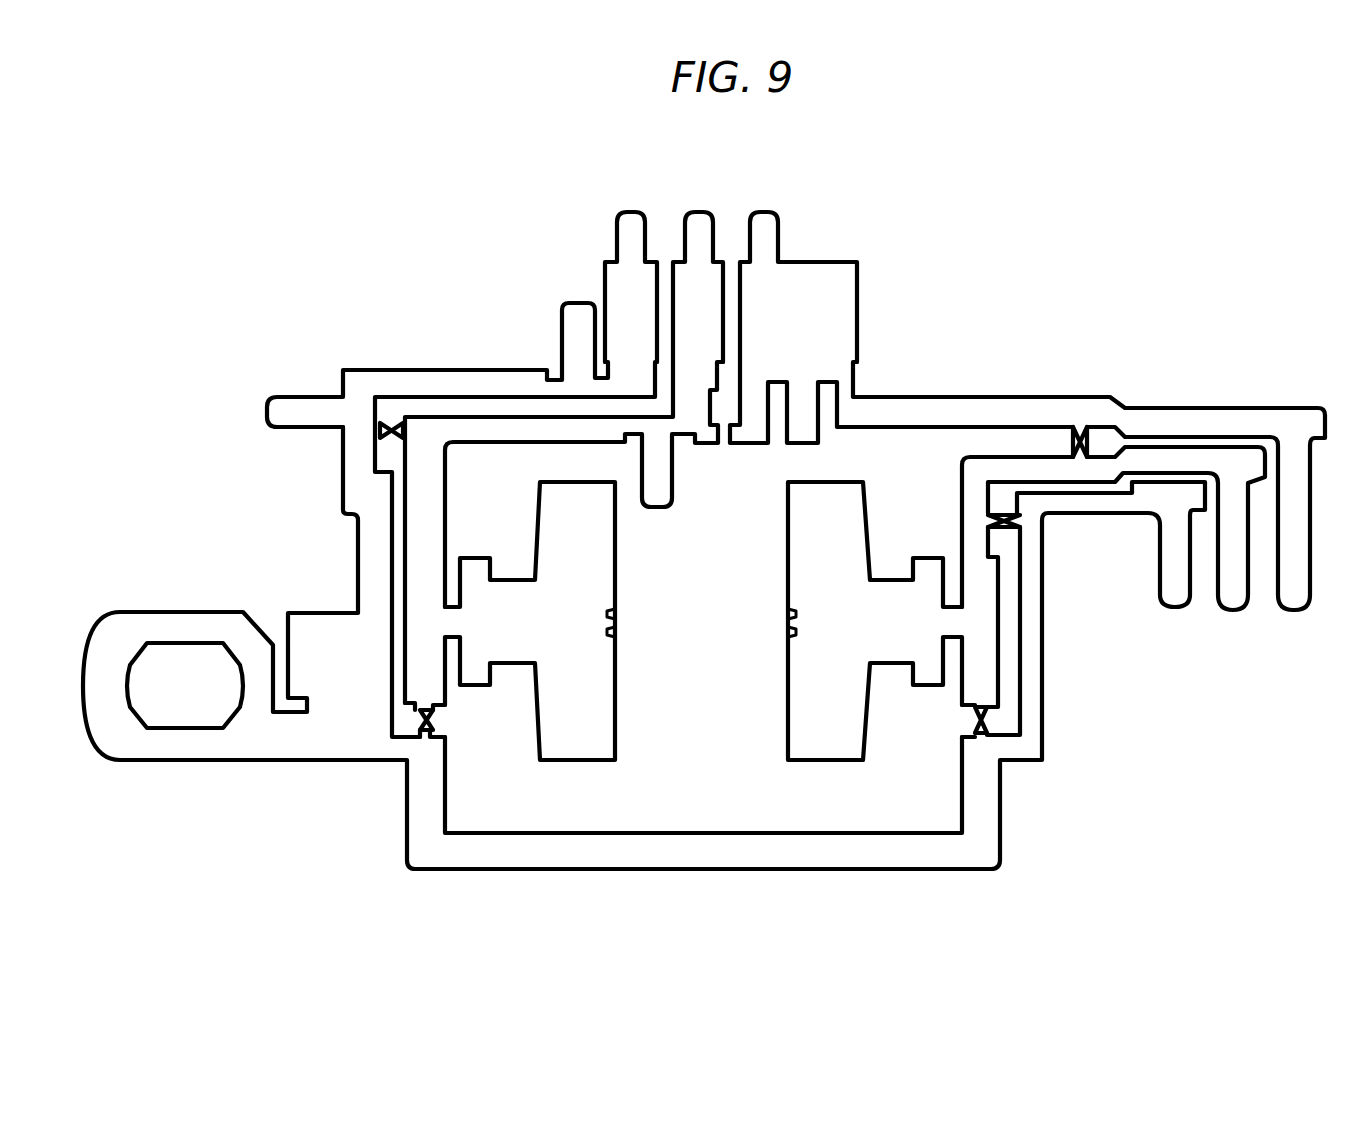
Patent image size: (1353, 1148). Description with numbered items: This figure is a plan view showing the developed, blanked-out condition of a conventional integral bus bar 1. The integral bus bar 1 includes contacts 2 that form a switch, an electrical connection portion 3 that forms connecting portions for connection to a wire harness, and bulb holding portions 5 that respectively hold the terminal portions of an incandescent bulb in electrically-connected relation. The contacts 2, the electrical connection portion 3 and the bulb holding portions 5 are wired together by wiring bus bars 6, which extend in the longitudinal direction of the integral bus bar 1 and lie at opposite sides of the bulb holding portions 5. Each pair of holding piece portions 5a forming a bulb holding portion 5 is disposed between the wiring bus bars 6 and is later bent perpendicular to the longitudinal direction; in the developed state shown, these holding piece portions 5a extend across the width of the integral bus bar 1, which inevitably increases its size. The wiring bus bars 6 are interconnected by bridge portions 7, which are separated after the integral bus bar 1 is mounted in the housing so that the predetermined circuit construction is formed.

The integral bus bar 1 is at (922, 304).
The contacts 2 is at (790, 205).
The electrical connection portion 3 is at (1325, 613).
The bulb holding portions 5 is at (577, 742).
The holding piece portions 5a is at (602, 538).
The wiring bus bars 6 is at (485, 438).
The bridge portions 7 is at (392, 423).